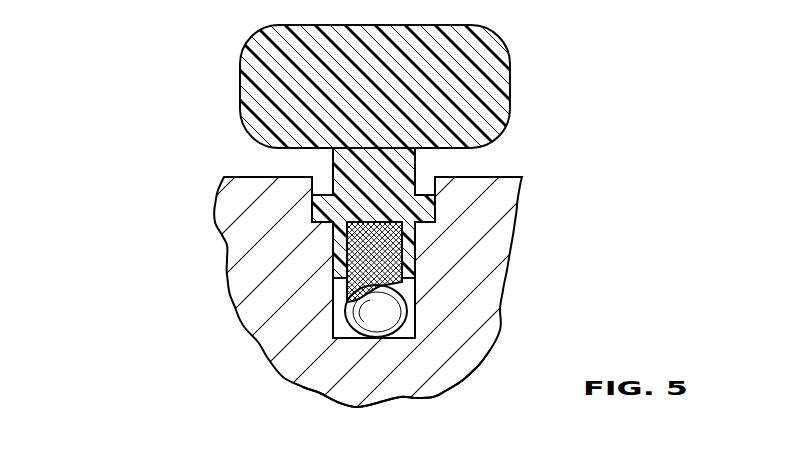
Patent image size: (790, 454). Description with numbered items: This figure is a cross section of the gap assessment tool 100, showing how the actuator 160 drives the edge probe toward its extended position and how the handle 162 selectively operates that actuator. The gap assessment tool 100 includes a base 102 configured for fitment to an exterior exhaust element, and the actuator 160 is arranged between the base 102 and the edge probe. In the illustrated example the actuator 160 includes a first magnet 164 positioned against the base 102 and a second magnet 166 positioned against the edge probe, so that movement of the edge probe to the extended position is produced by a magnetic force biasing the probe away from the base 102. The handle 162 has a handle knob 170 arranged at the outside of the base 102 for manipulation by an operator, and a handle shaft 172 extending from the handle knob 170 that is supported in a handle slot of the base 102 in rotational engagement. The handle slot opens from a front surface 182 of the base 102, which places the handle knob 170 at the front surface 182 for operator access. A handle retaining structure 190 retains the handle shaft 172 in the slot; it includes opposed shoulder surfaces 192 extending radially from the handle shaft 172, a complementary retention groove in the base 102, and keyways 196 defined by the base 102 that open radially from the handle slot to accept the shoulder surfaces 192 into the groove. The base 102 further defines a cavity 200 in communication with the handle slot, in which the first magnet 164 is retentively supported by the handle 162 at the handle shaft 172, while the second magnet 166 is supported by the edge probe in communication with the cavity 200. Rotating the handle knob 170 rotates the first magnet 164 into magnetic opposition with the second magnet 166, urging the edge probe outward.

The gap assessment tool 100 is at (308, 384).
The base 102 is at (430, 400).
The actuator 160 is at (273, 287).
The handle 162 is at (278, 151).
The first magnet 164 is at (350, 258).
The second magnet 166 is at (345, 308).
The handle knob 170 is at (240, 84).
The handle shaft 172 is at (340, 250).
The front surface 182 is at (508, 177).
The handle retaining structure 190 is at (545, 215).
The shoulder surfaces 192 is at (428, 200).
The keyways 196 is at (425, 187).
The cavity 200 is at (412, 310).